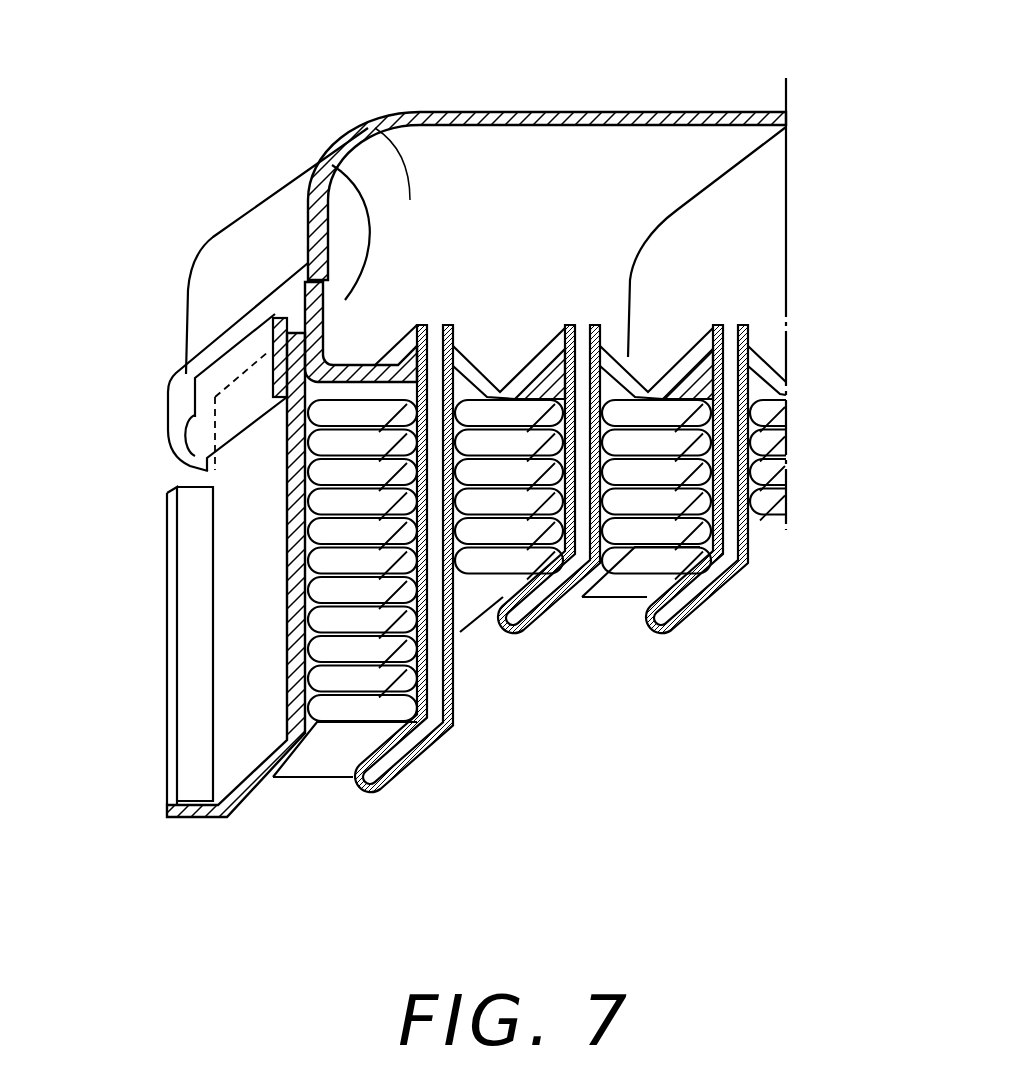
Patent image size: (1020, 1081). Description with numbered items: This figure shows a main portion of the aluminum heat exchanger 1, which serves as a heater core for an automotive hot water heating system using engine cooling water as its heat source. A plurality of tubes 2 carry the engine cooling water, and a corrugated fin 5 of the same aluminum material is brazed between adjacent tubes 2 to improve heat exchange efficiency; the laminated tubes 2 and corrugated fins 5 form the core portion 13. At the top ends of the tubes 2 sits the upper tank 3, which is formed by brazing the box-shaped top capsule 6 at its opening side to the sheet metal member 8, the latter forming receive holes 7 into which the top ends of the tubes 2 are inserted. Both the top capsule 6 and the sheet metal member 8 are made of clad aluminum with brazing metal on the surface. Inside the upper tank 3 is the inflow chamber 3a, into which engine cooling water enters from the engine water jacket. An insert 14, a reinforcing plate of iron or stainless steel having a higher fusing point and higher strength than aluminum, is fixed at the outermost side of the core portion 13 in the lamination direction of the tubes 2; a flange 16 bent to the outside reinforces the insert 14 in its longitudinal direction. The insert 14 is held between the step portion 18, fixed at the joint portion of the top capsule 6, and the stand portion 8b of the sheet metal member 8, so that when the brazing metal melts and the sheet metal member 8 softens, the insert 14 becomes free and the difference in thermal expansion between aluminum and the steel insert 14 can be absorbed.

The aluminum heat exchanger 1 is at (205, 231).
The tube 2 is at (430, 730).
The upper tank 3 is at (410, 200).
The inflow chamber 3a is at (633, 168).
The corrugated fin 5 is at (330, 410).
The top capsule 6 is at (452, 117).
The receive holes 7 is at (470, 343).
The sheet metal member 8 is at (663, 397).
The stand portion 8b is at (318, 163).
The core portion 13 is at (163, 368).
The insert 14 is at (235, 558).
The flange 16 is at (167, 648).
The step portion 18 is at (270, 315).